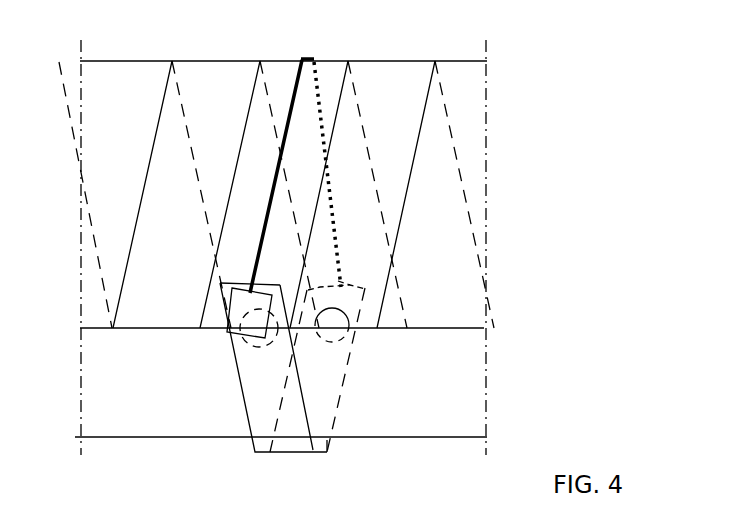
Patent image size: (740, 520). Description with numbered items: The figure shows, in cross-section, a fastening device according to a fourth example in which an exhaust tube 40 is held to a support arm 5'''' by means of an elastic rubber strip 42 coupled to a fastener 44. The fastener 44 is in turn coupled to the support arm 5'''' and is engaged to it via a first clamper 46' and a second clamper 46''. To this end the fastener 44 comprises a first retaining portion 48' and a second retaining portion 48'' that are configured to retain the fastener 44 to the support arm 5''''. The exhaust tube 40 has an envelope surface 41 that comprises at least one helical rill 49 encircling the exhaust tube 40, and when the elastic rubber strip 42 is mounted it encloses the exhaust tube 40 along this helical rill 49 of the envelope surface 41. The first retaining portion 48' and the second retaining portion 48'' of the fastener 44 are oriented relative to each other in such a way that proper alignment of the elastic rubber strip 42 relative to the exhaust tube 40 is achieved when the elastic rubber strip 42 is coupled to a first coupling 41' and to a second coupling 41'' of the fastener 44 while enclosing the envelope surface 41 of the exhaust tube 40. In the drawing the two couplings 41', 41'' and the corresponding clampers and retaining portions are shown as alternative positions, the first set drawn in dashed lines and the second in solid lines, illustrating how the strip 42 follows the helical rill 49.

The exhaust tube 40 is at (456, 62).
The envelope surface 41 is at (282, 291).
The first coupling 41' is at (423, 209).
The second coupling 41'' is at (190, 190).
The elastic rubber strip 42 is at (298, 84).
The fastener 44 is at (329, 466).
The first clamper 46' is at (443, 280).
The second clamper 46'' is at (260, 355).
The first retaining portion 48' is at (361, 370).
The second retaining portion 48'' is at (227, 355).
The helical rill 49 is at (254, 91).
The support arm 5'''' is at (281, 469).